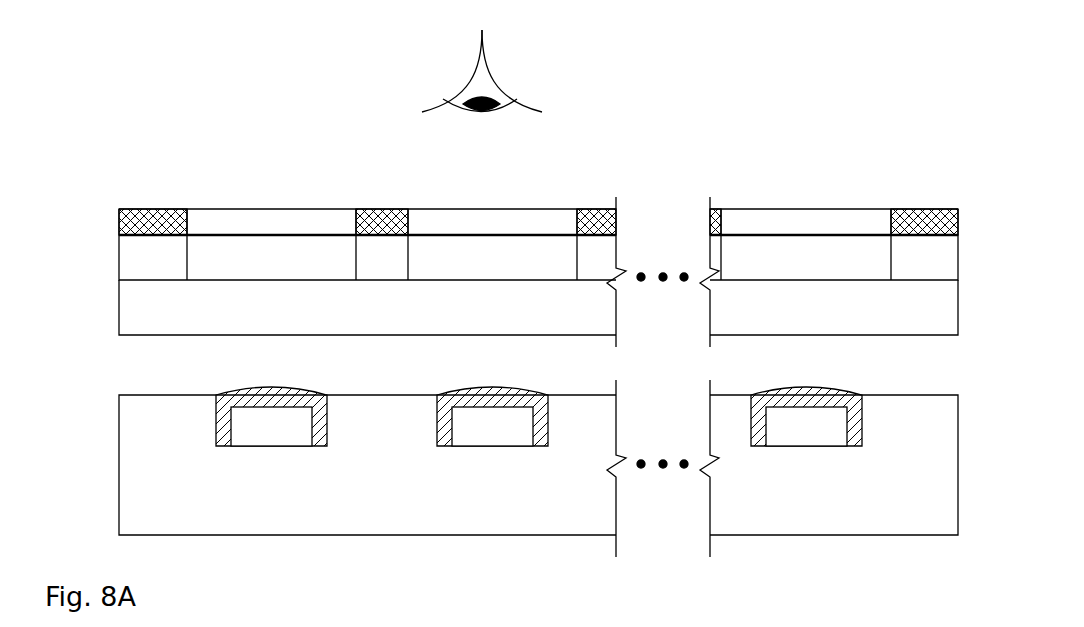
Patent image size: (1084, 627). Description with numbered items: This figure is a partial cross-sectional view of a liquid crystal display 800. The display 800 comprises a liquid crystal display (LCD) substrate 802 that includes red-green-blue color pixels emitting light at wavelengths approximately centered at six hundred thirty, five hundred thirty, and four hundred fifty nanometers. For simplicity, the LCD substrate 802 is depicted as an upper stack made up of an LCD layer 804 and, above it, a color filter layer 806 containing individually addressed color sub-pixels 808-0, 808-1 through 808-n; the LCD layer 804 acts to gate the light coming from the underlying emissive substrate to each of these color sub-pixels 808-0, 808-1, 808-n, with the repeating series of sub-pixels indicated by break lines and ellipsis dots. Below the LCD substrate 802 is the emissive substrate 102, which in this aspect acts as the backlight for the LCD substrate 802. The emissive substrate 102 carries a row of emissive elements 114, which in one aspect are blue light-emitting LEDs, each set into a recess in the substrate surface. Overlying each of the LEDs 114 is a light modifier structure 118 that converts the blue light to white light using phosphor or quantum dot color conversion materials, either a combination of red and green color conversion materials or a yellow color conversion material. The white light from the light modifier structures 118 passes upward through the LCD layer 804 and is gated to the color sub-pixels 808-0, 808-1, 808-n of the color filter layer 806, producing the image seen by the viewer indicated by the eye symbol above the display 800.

The display 800 is at (880, 150).
The liquid crystal display substrate 802 is at (112, 208).
The LCD layer 804 is at (213, 319).
The color filter layer 806 is at (195, 208).
The color sub-pixel 808-0 is at (302, 269).
The color sub-pixel 808-1 is at (521, 269).
The color sub-pixel 808-n is at (836, 269).
The emissive substrate 102 is at (213, 501).
The emissive element 114 is at (290, 437).
The light modifier structure 118 is at (305, 393).